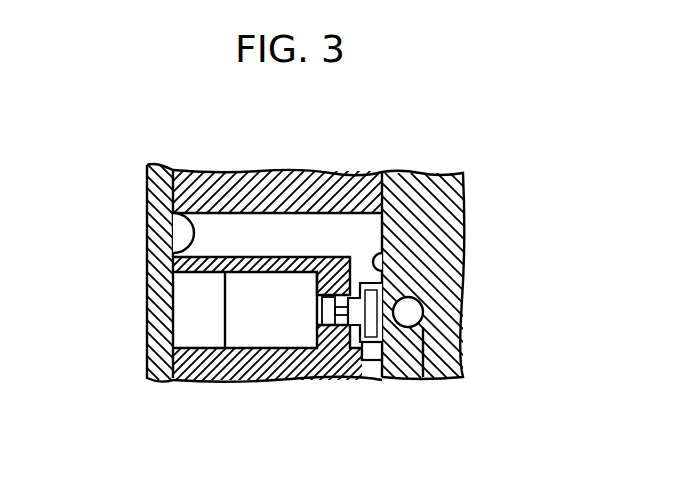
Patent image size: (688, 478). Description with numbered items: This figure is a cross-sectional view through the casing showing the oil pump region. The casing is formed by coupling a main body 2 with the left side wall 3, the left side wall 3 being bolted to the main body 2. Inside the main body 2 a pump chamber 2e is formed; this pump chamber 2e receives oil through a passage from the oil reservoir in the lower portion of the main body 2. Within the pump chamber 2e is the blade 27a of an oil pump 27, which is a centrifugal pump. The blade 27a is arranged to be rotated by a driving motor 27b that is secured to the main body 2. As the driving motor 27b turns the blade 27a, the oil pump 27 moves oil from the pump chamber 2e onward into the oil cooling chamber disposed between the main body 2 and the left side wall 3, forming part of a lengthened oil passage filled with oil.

The main body 2 is at (283, 182).
The pump chamber 2e is at (383, 252).
The left side wall 3 is at (147, 262).
The oil pump 27 is at (301, 329).
The blade 27a is at (367, 362).
The driving motor 27b is at (253, 333).